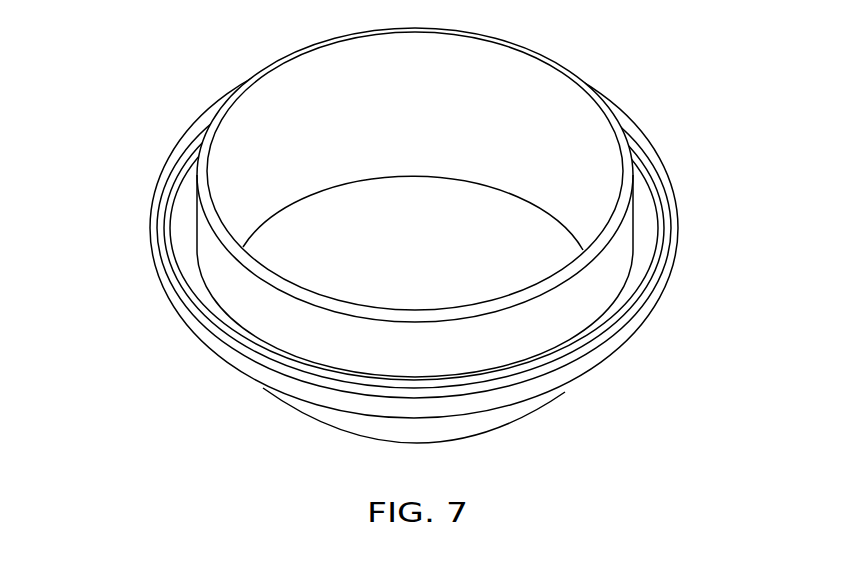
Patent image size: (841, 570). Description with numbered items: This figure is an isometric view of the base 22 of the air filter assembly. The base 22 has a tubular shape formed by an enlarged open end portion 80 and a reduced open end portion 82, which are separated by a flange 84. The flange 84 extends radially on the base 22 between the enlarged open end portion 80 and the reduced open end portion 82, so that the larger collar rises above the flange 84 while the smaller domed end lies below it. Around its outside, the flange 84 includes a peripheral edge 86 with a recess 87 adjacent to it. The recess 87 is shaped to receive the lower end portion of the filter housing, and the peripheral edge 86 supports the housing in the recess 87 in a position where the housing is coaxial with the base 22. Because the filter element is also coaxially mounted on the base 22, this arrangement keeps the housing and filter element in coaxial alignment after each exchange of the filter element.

The base 22 is at (399, 246).
The enlarged open end portion 80 is at (197, 203).
The reduced open end portion 82 is at (510, 417).
The flange 84 is at (643, 243).
The peripheral edge 86 is at (648, 140).
The recess 87 is at (163, 203).